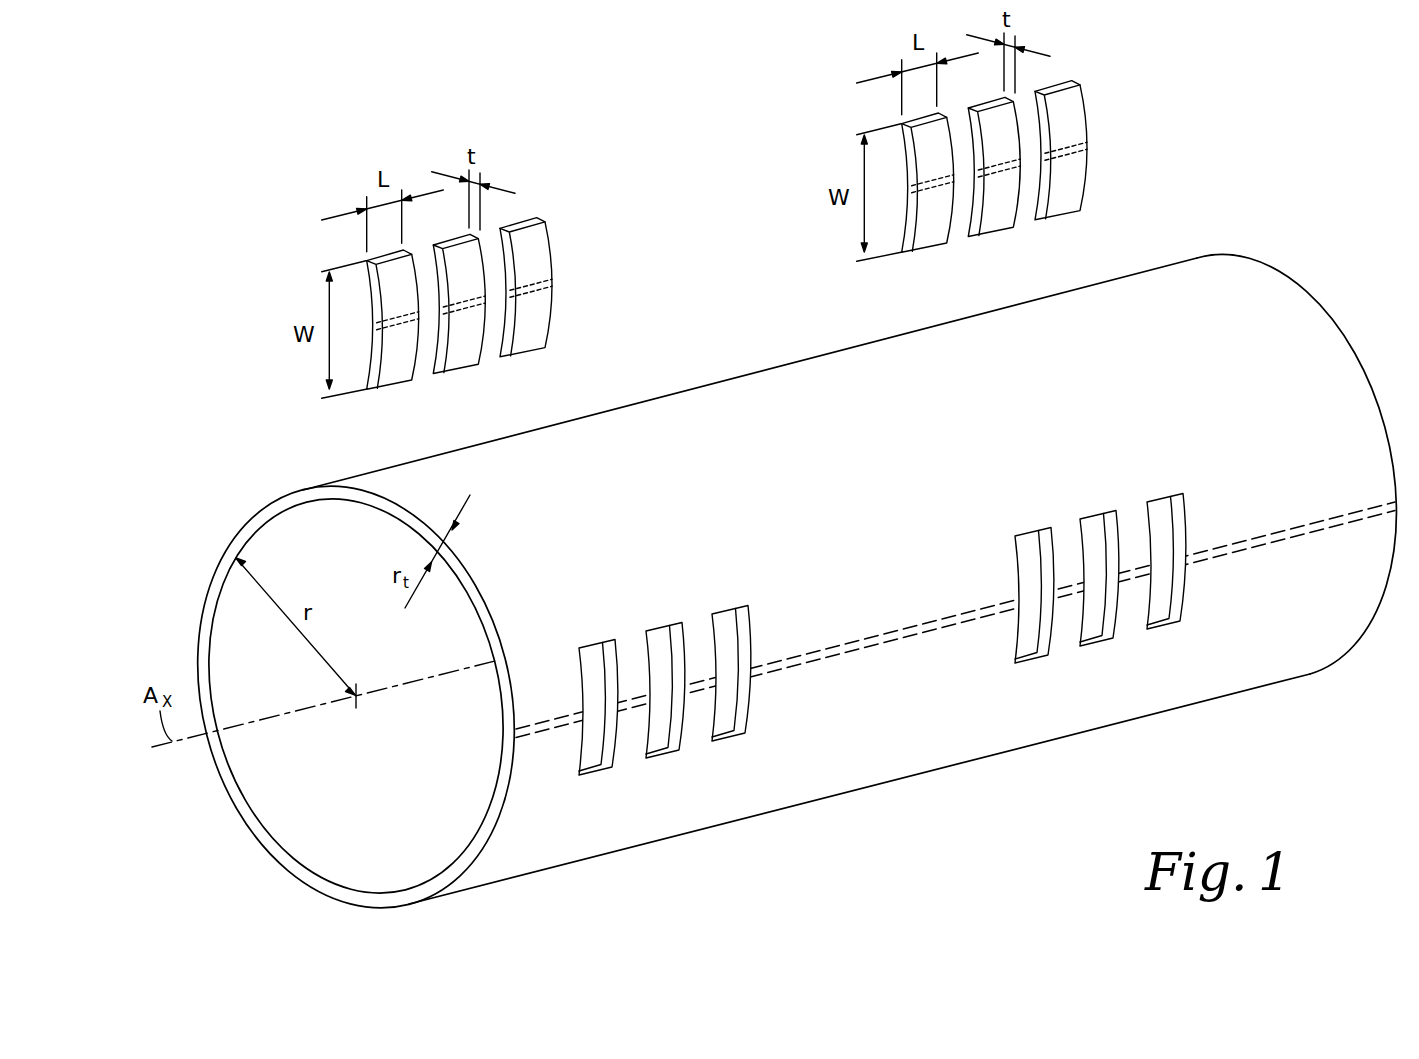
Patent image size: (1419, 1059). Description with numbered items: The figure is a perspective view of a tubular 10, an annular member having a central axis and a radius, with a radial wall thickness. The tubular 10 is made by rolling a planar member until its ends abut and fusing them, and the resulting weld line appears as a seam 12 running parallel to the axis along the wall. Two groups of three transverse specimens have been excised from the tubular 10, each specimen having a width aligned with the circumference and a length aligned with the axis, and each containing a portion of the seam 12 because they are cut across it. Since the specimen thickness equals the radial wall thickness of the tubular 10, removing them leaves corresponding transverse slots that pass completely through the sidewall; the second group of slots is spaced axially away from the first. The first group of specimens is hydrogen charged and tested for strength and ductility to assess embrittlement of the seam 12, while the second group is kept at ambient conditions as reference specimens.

The tubular 10 is at (187, 450).
The seam 12 is at (1360, 511).